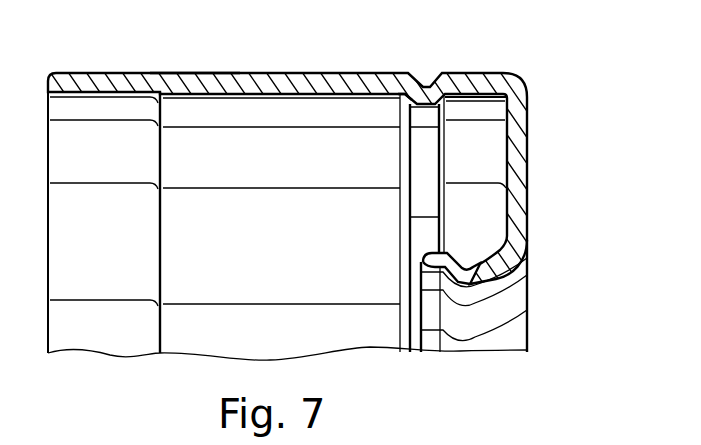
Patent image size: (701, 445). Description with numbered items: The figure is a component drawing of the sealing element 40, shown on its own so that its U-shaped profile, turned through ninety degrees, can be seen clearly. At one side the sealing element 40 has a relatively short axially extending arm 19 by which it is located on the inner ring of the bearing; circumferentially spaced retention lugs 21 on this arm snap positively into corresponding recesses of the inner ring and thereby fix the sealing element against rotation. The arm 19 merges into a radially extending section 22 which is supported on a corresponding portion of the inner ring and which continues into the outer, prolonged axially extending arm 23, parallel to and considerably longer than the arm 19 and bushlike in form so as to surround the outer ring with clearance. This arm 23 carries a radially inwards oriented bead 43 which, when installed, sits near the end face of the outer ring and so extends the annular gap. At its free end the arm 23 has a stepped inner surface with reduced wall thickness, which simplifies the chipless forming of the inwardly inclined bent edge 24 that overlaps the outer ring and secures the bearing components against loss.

The arm 19 is at (422, 258).
The retention lug 21 is at (458, 277).
The radially extending section 22 is at (503, 180).
The axially extending arm 23 is at (265, 72).
The bent edge 24 is at (80, 73).
The sealing element 40 is at (188, 64).
The bead 43 is at (404, 98).